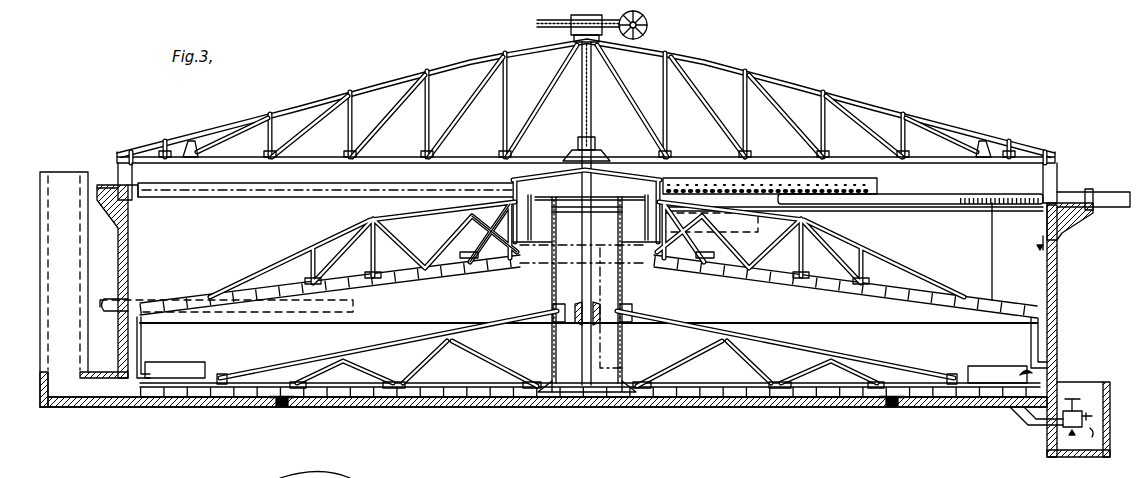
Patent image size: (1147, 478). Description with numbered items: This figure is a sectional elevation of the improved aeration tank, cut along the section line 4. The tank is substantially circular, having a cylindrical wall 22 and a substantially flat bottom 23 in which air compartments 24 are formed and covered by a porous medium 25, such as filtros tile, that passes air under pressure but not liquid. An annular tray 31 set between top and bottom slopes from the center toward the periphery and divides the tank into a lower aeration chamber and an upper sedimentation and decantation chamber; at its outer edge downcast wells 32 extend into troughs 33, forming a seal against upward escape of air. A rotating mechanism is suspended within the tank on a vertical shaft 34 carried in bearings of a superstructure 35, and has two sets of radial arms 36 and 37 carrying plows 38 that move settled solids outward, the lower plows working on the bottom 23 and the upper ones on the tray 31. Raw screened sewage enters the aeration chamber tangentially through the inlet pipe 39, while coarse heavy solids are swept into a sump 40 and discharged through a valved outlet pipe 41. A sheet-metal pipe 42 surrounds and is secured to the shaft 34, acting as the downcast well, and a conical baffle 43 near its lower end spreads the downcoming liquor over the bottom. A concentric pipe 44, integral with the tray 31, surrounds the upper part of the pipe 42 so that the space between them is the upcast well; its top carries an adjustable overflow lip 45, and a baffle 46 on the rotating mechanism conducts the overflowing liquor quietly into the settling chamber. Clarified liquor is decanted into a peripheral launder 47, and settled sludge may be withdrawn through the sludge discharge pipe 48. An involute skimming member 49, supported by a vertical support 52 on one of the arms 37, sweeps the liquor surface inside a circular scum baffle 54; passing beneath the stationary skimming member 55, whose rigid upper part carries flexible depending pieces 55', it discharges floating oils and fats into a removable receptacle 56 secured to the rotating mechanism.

The section line 4- 4 is at (32, 330).
The cylindrical wall 22 is at (129, 268).
The bottom 23 is at (658, 408).
The air compartments 24 is at (284, 408).
The porous medium 25 is at (276, 406).
The tray 31 is at (446, 268).
The downcast wells 32 is at (143, 347).
The troughs 33 is at (178, 366).
The shaft 34 is at (585, 104).
The superstructure 35 is at (730, 75).
The radially disposed arms 36 is at (421, 388).
The radially disposed arms 37 is at (366, 274).
The plows 38 is at (750, 400).
The inlet pipe 39 is at (101, 393).
The sump 40 is at (1034, 421).
The outlet pipe 41 is at (1085, 412).
The pipe 42 is at (624, 288).
The baffle 43 is at (612, 380).
The pipe 44 is at (540, 250).
The adjustable overflow lip 45 is at (549, 188).
The baffle 46 is at (493, 233).
The peripheral launder 47 is at (1072, 192).
The sludge discharge pipe 48 is at (110, 298).
The skimming member 49 is at (946, 204).
The vertical support 52 is at (994, 260).
The scum baffle 54 is at (238, 199).
The stationary skimming member 55 is at (770, 183).
The depending pieces 55' is at (853, 217).
The receptacle 56 is at (750, 228).